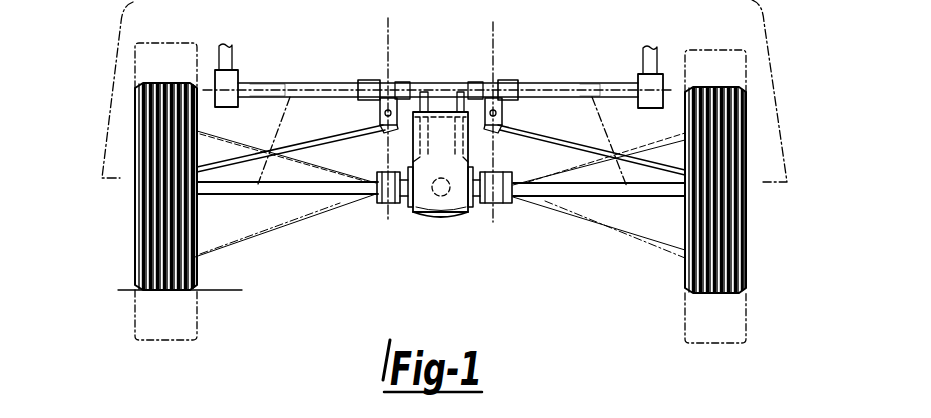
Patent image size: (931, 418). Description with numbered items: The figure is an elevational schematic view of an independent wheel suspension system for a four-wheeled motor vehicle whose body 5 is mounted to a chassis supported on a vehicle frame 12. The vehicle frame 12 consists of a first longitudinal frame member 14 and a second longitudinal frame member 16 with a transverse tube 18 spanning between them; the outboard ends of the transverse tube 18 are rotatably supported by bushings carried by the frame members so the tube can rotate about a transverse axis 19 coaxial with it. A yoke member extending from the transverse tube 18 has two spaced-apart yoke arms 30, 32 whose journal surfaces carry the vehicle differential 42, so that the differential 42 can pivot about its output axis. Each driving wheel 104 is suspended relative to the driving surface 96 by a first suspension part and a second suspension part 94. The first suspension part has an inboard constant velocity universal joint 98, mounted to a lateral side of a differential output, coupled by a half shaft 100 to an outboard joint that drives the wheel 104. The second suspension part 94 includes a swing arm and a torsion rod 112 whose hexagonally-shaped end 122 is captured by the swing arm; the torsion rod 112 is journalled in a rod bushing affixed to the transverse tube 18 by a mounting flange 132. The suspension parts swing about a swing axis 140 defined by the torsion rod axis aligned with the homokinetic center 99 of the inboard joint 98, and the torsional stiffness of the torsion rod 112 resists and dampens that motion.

The body 5 is at (118, 47).
The vehicle frame 12 is at (599, 62).
The first longitudinal frame member 14 is at (210, 62).
The second longitudinal frame member 16 is at (665, 74).
The transverse tube 18 is at (322, 88).
The transverse axis 19 is at (265, 82).
The yoke arm 30 is at (476, 210).
The yoke arm 32 is at (408, 215).
The vehicle differential 42 is at (441, 218).
The second suspension part 94 is at (336, 110).
The driving surface 96 is at (232, 290).
The inboard constant velocity universal joint 98 is at (514, 201).
The homokinetic center 99 is at (372, 200).
The half shaft 100 is at (250, 188).
The driving wheel 104 is at (145, 237).
The torsion rod 112 is at (360, 143).
The hexagonally-shaped end 122 is at (388, 78).
The mounting flange 132 is at (495, 85).
The swing axis 140 is at (389, 40).